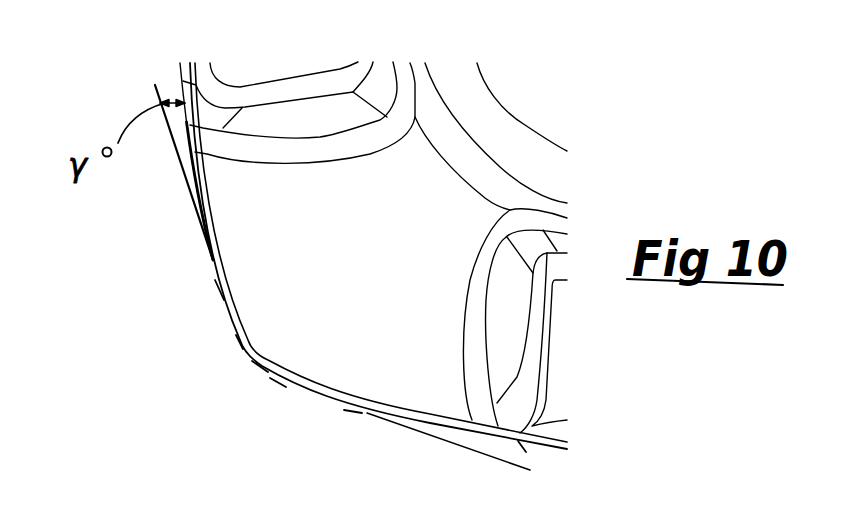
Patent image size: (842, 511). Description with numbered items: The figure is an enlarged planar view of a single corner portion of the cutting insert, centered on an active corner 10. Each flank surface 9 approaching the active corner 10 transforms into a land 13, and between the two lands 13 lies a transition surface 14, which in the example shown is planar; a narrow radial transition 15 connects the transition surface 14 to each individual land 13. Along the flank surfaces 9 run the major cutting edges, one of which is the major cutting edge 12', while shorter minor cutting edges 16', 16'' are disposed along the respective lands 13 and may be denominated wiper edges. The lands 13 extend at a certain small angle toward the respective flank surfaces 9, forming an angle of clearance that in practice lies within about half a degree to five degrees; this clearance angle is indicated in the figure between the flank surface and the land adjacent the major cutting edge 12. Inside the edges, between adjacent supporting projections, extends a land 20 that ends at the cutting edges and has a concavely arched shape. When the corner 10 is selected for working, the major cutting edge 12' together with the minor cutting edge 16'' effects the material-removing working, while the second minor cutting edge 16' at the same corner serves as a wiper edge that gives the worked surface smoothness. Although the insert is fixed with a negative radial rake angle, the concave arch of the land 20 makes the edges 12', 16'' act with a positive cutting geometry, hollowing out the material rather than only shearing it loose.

The flank surface 9 is at (202, 200).
The active corner 10 is at (161, 388).
The major cutting edge 12 is at (160, 161).
The major cutting edge 12' is at (567, 467).
The land 13 is at (230, 315).
The transition surface 14 is at (260, 367).
The radial transition 15 is at (240, 347).
The minor cutting edge 16' is at (172, 303).
The minor cutting edge 16'' is at (359, 451).
The land 20 is at (365, 292).